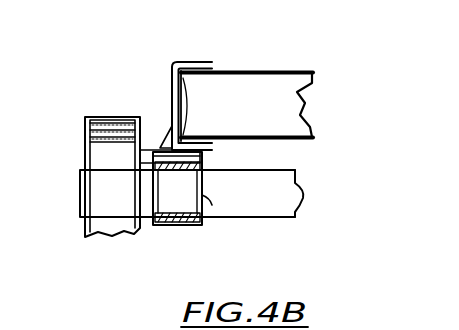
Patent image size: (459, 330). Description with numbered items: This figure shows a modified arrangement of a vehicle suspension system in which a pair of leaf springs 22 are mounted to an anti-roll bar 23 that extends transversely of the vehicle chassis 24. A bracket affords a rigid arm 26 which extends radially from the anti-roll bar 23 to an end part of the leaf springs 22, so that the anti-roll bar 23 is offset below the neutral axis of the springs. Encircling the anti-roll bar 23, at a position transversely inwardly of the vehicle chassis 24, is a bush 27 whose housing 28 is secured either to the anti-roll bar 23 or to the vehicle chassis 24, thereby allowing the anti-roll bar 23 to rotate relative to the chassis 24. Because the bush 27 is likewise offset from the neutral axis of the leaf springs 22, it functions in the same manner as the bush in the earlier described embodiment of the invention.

The leaf springs 22 is at (113, 117).
The anti-roll bar 23 is at (258, 202).
The vehicle chassis 24 is at (170, 92).
The rigid arm 26 is at (202, 162).
The bush 27 is at (173, 223).
The housing 28 is at (212, 205).